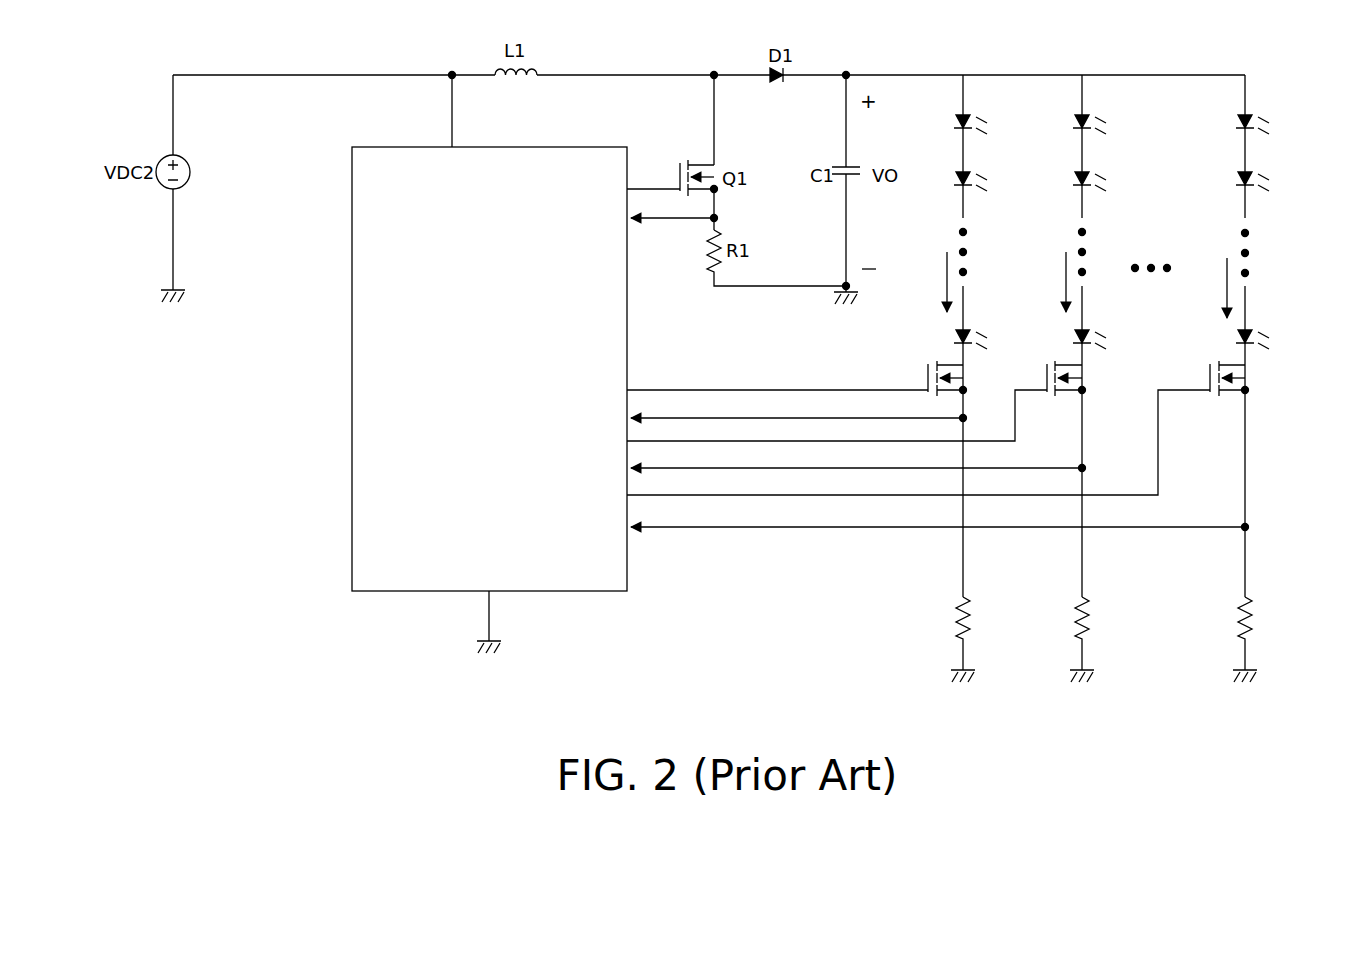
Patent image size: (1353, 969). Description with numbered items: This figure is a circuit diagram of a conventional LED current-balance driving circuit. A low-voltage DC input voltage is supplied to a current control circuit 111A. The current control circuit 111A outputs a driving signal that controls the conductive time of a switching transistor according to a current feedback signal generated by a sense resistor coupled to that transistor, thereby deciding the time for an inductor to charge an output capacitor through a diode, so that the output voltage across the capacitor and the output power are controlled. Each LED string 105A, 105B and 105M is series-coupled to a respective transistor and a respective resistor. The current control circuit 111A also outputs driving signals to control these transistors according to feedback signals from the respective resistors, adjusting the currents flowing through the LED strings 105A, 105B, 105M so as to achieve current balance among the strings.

The current control circuit 111A is at (590, 145).
The LED string 105A is at (1035, 245).
The LED string 105B is at (1154, 245).
The LED string 105M is at (1320, 245).